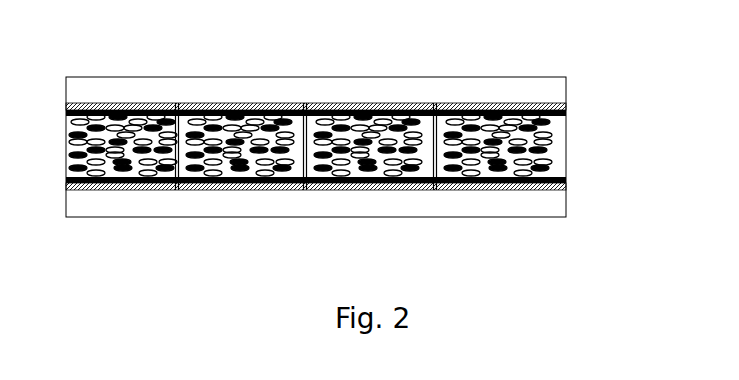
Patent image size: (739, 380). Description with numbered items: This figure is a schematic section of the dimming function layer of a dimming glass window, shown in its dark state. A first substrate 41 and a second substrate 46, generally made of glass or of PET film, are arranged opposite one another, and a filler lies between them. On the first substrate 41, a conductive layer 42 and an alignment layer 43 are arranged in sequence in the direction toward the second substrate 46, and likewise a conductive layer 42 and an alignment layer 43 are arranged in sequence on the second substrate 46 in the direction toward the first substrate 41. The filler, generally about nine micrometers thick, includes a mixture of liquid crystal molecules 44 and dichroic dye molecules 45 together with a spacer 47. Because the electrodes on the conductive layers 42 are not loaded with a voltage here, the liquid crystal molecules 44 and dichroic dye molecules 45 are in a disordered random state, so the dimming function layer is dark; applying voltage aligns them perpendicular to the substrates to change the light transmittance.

The first substrate 41 is at (350, 92).
The conductive layer 42 is at (493, 105).
The alignment layer 43 is at (567, 111).
The liquid crystal molecules 44 is at (550, 135).
The dichroic dye molecules 45 is at (553, 153).
The second substrate 46 is at (310, 195).
The spacer 47 is at (183, 183).